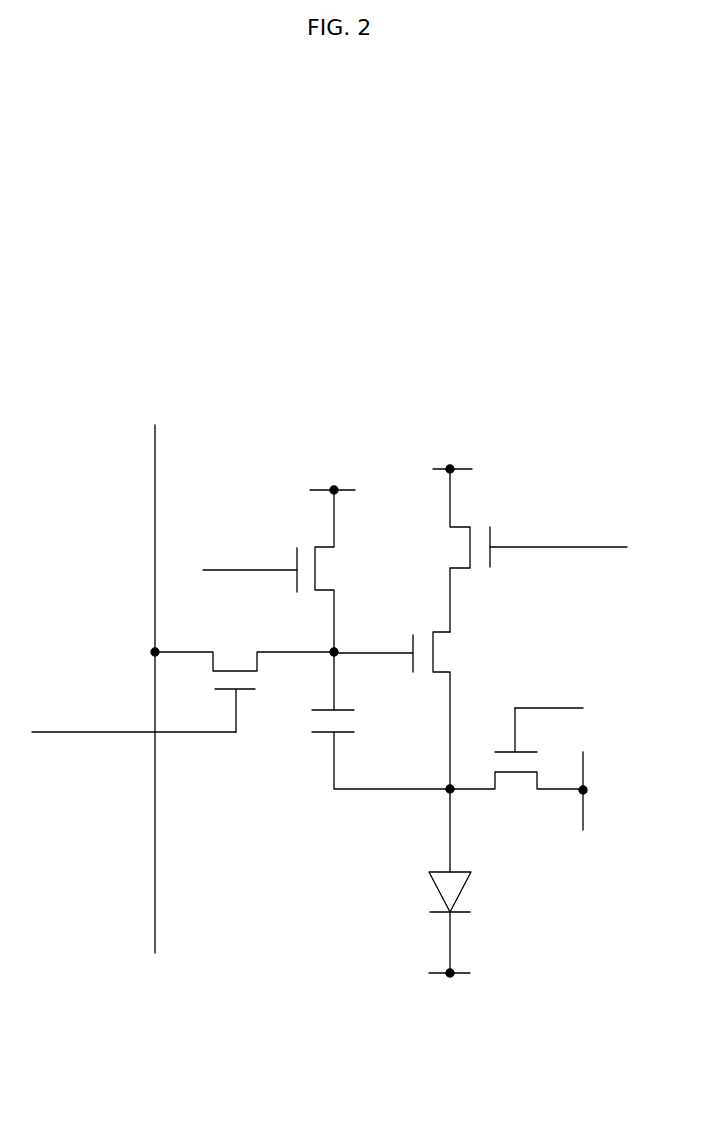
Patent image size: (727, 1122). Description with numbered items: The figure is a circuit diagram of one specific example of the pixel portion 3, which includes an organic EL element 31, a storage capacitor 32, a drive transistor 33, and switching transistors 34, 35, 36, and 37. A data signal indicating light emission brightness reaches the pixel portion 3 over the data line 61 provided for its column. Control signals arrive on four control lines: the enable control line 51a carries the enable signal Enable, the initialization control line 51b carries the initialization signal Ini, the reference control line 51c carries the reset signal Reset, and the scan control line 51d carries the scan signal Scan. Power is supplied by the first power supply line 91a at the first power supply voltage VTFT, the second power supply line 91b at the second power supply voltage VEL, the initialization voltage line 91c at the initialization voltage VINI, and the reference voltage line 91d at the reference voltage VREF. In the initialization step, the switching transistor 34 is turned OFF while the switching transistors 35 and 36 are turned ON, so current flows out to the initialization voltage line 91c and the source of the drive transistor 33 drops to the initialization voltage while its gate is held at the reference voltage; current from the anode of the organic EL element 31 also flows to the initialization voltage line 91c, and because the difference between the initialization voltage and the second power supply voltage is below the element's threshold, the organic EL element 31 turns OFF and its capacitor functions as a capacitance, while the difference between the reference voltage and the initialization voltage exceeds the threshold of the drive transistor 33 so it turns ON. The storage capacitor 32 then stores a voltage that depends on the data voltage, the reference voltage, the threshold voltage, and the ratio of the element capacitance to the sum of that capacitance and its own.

The pixel portion 3 is at (419, 395).
The organic EL element 31 is at (432, 887).
The storage capacitor 32 is at (322, 732).
The drive transistor 33 is at (433, 650).
The switching transistor 34 is at (492, 537).
The switching transistor 35 is at (509, 775).
The switching transistor 36 is at (315, 572).
The switching transistor 37 is at (237, 668).
The enable control line 51a is at (592, 547).
The initialization control line 51b is at (567, 707).
The reference control line 51c is at (266, 567).
The scan control line 51d is at (83, 732).
The data line 61 is at (153, 893).
The first power supply line 91a is at (442, 467).
The second power supply line 91b is at (458, 973).
The initialization voltage line 91c is at (585, 808).
The reference voltage line 91d is at (350, 483).